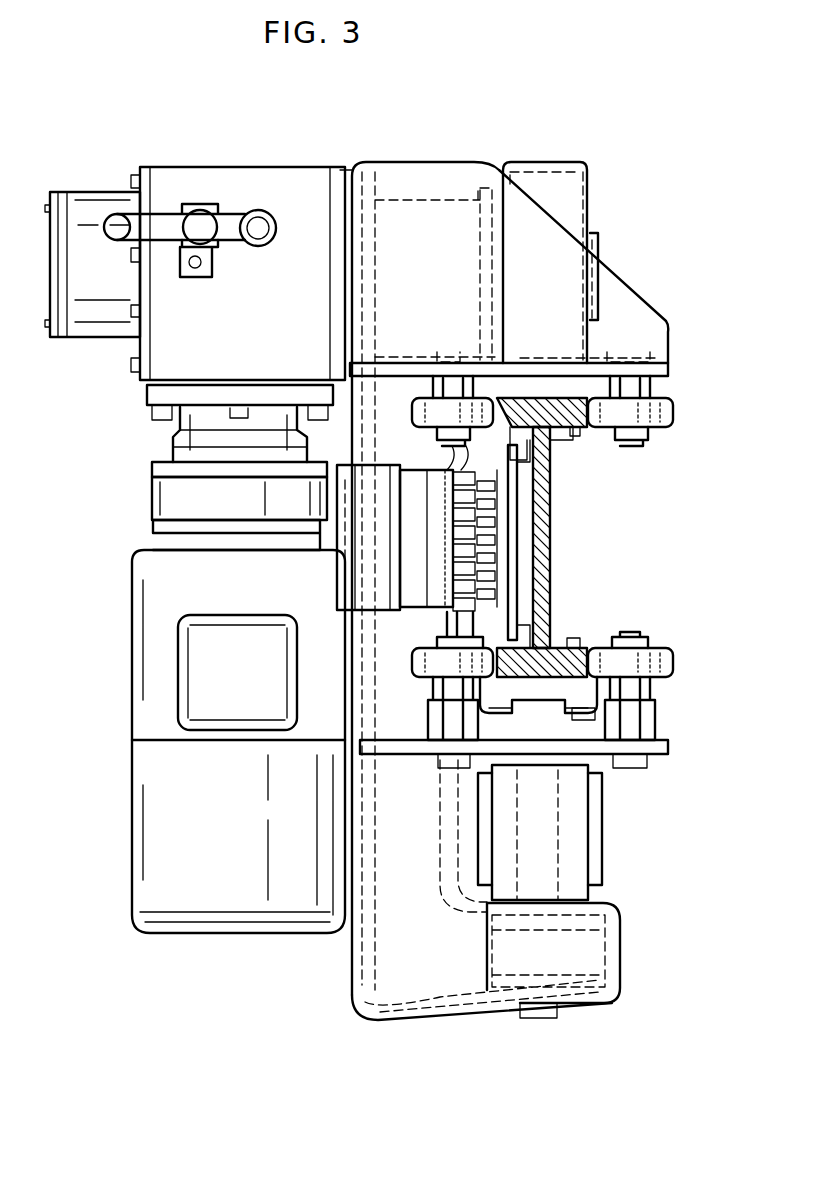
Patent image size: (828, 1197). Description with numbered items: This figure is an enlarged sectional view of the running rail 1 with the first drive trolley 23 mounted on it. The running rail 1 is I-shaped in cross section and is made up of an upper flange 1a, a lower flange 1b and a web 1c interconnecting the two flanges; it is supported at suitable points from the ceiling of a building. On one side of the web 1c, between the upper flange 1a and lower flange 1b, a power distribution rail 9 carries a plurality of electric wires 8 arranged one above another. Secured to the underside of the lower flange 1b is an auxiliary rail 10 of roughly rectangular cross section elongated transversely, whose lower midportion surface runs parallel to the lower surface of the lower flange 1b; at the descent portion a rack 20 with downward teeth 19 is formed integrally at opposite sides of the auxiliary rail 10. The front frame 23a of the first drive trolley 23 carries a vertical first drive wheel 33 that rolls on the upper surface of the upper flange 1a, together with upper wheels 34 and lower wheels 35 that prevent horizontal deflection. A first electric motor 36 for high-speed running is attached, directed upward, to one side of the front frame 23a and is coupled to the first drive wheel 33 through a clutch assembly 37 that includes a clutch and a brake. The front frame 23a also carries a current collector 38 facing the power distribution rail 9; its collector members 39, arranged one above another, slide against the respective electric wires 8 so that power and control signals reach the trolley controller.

The running rail 1 is at (541, 548).
The upper flange 1a is at (577, 413).
The lower flange 1b is at (573, 657).
The web 1c is at (545, 585).
The electric wires 8 is at (478, 510).
The power distribution rail 9 is at (517, 478).
The auxiliary rail 10 is at (558, 690).
The downward teeth 19 is at (588, 717).
The rack 20 is at (596, 714).
The first drive trolley 23 is at (141, 143).
The front frame 23a is at (408, 170).
The first drive wheel 33 is at (558, 165).
The upper wheels 34 is at (412, 407).
The lower wheels 35 is at (412, 665).
The first electric motor 36 is at (140, 676).
The clutch assembly 37 is at (228, 178).
The current collector 38 is at (430, 570).
The collector members 39 is at (505, 492).